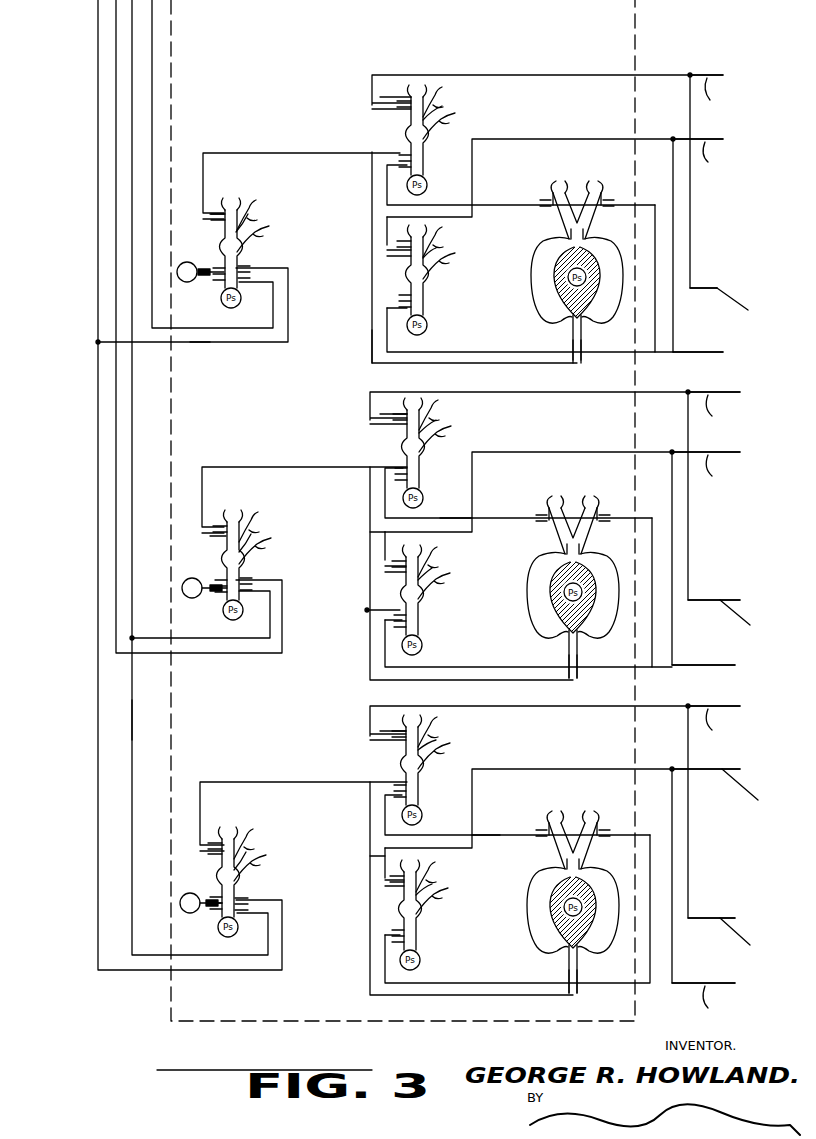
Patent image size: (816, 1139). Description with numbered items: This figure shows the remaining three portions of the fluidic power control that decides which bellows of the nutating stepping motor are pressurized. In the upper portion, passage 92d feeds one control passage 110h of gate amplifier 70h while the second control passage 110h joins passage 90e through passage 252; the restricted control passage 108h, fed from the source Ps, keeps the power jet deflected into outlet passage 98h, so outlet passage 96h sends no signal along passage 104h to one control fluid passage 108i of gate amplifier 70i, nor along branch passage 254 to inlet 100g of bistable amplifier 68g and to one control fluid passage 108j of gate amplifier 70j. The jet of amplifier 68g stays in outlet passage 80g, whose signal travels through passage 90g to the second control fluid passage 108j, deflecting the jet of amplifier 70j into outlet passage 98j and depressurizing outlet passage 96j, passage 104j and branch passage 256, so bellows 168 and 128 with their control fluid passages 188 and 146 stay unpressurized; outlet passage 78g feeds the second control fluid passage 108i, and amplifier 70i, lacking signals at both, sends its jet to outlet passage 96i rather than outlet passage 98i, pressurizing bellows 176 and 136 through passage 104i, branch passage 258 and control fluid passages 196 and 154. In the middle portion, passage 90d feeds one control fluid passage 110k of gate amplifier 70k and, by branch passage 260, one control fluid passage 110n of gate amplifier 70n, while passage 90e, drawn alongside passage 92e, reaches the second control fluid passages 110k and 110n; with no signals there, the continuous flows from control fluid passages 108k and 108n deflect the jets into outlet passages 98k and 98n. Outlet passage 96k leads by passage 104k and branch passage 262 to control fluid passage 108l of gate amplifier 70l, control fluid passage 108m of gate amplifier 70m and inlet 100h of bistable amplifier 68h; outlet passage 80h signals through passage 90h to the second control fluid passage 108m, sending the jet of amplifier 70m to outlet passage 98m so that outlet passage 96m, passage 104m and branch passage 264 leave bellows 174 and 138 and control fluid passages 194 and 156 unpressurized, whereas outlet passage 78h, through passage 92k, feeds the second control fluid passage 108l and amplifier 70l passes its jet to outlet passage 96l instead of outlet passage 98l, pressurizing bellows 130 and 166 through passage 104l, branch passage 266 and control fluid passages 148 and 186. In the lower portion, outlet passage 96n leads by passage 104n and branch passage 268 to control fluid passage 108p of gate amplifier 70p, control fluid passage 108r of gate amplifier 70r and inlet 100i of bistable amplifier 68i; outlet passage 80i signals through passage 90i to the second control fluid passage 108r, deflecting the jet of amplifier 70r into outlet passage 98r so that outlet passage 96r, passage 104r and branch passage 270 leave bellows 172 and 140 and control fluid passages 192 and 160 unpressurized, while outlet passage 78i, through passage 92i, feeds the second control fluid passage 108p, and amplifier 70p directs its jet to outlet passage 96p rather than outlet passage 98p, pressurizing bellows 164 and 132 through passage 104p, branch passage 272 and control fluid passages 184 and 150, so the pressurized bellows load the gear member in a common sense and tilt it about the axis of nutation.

The supply line 90d is at (132, 144).
The supply line 92e is at (116, 208).
The supply line 90e is at (98, 270).
The supply line 92d is at (160, 18).
The supply line 260 is at (132, 730).
The control unit housing 104h is at (258, 153).
The nerve conduit 70h is at (246, 250).
The branch 96h is at (224, 232).
The branch 98h is at (250, 215).
The connection 110h is at (250, 262).
The pressure sensor 108h is at (205, 266).
The conduit 252 is at (200, 344).
The conduit 254 is at (372, 350).
The control unit housing 104i is at (506, 75).
The nerve conduit 70i is at (407, 136).
The branch 96i is at (397, 104).
The pressure sensor 108i is at (400, 136).
The branch 98i is at (442, 106).
The control unit housing 104j is at (535, 139).
The nerve conduit 70j is at (423, 278).
The branch 96j is at (398, 262).
The branch 98j is at (436, 248).
The pressure sensor 108j is at (388, 310).
The heart 68g is at (540, 240).
The vessel 78g is at (566, 178).
The vessel 80g is at (586, 178).
The outlet conduit 100g is at (572, 336).
The line 90g is at (580, 362).
The bellows line 176 is at (742, 73).
The conduit 196 is at (726, 95).
The bellows line 168 is at (744, 138).
The conduit 188 is at (726, 159).
The conduit 258 is at (690, 218).
The bellows line 136 is at (753, 287).
The conduit 154 is at (755, 306).
The conduit 256 is at (673, 318).
The bellows line 128 is at (737, 351).
The conduit 146 is at (695, 353).
The bellows line 130 is at (745, 391).
The conduit 148 is at (726, 412).
The control unit housing 104l is at (497, 392).
The nerve conduit 70l is at (419, 432).
The branch 96l is at (395, 420).
The pressure sensor 108l is at (395, 452).
The branch 98l is at (436, 410).
The line 92k is at (444, 518).
The conduit 262 is at (370, 540).
The control unit housing 104m is at (558, 452).
The nerve conduit 70m is at (418, 595).
The branch 96m is at (396, 580).
The branch 98m is at (436, 568).
The pressure sensor 108m is at (396, 592).
The heart 68h is at (540, 580).
The vessel 78h is at (566, 494).
The vessel 80h is at (584, 494).
The outlet conduit 100h is at (568, 652).
The line 90h is at (580, 672).
The bellows line 174 is at (742, 450).
The conduit 194 is at (729, 472).
The conduit 266 is at (690, 526).
The bellows line 166 is at (746, 597).
The conduit 186 is at (753, 622).
The conduit 264 is at (674, 636).
The bellows line 138 is at (732, 666).
The conduit 156 is at (697, 668).
The control unit housing 104k is at (270, 467).
The nerve conduit 70k is at (248, 562).
The branch 96k is at (226, 542).
The branch 98k is at (250, 530).
The connection 110k is at (252, 577).
The pressure sensor 108k is at (215, 598).
The control unit housing 104n is at (272, 782).
The nerve conduit 70n is at (246, 884).
The branch 96n is at (222, 850).
The branch 98n is at (246, 852).
The connection 110n is at (250, 900).
The pressure sensor 108n is at (206, 918).
The control unit housing 104p is at (520, 706).
The nerve conduit 70p is at (418, 762).
The branch 96p is at (395, 740).
The pressure sensor 108p is at (396, 768).
The branch 98p is at (438, 742).
The conduit 268 is at (370, 856).
The control unit housing 104r is at (546, 769).
The nerve conduit 70r is at (416, 910).
The branch 96r is at (396, 908).
The branch 98r is at (434, 884).
The pressure sensor 108r is at (392, 936).
The line 92i is at (486, 835).
The heart 68i is at (540, 905).
The vessel 78i is at (566, 810).
The vessel 80i is at (584, 810).
The outlet conduit 100i is at (568, 968).
The line 90i is at (652, 835).
The bellows line 164 is at (742, 705).
The conduit 184 is at (728, 724).
The bellows line 172 is at (738, 767).
The conduit 192 is at (759, 793).
The conduit 272 is at (690, 848).
The bellows line 132 is at (745, 912).
The conduit 150 is at (752, 939).
The conduit 270 is at (674, 951).
The bellows line 140 is at (732, 979).
The conduit 160 is at (721, 1002).